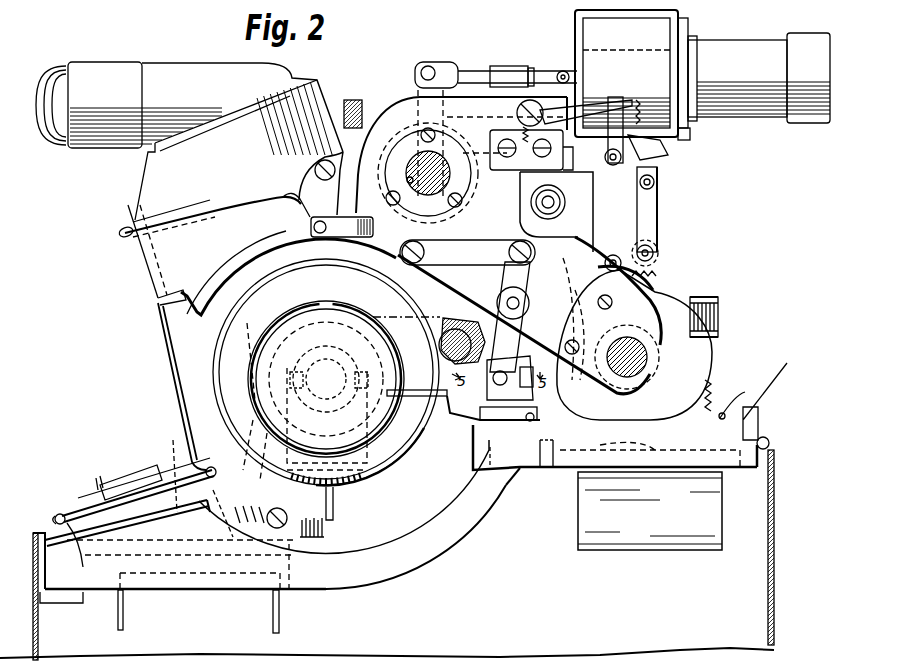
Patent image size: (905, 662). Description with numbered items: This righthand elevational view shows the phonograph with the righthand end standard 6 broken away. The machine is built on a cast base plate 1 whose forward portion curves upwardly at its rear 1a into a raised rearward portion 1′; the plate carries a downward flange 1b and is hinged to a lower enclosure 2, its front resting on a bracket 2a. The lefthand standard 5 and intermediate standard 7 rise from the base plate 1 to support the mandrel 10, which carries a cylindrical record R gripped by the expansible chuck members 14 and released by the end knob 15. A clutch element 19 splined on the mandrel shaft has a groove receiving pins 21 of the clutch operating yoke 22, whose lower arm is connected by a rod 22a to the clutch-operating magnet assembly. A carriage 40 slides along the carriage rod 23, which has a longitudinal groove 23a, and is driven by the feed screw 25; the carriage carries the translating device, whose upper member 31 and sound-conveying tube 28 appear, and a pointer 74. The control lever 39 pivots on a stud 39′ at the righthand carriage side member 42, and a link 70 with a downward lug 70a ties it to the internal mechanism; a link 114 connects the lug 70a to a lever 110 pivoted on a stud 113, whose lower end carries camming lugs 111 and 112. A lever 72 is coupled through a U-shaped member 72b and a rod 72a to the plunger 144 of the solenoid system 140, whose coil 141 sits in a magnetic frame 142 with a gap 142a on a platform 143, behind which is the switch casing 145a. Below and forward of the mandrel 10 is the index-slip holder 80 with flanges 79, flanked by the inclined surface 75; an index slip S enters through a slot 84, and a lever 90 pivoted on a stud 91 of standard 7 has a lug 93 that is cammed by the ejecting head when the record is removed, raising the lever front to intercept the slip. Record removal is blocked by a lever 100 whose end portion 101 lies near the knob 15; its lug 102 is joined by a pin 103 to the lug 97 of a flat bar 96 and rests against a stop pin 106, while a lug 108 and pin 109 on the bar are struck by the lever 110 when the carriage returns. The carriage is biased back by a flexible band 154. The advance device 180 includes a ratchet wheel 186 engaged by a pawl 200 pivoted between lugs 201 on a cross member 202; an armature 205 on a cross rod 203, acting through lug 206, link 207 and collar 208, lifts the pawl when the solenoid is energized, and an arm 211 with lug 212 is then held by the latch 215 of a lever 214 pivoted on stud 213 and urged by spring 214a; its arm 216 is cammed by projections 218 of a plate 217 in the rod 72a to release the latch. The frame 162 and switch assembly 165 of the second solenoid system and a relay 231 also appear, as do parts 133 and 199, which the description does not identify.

The base plate 1 is at (385, 560).
The upwardly curving rear portion 1a is at (465, 515).
The downward flange 1b is at (425, 560).
The raised rearward portion 1′ is at (748, 418).
The lower enclosure 2 is at (774, 575).
The bracket 2a is at (53, 602).
The lefthand standard 5 is at (594, 216).
The righthand end standard 6 is at (735, 405).
The intermediate standard 7 is at (440, 320).
The mandrel 10 is at (248, 397).
The expansible chuck members 14 is at (249, 374).
The righthand end knob 15 is at (256, 345).
The clutch element 19 is at (354, 376).
The pins 21 is at (365, 372).
The clutch operating yoke 22 is at (370, 505).
The rod 22a is at (290, 590).
The carriage rod 23 is at (452, 182).
The longitudinal groove 23a is at (407, 180).
The feed screw 25 is at (540, 203).
The sound-conveying tube 28 is at (85, 148).
The upper circular member 31 is at (150, 455).
The translating device control lever 39 is at (124, 238).
The horizontal stud 39′ is at (316, 175).
The carriage 40 is at (467, 95).
The righthand carriage side member 42 is at (377, 225).
The link 70 is at (342, 227).
The short lug 70a is at (412, 263).
The lever 72 is at (414, 74).
The rod 72a is at (470, 70).
The U-shaped member 72b is at (436, 66).
The pointer 74 is at (80, 500).
The inclined surface 75 is at (95, 500).
The flanges 79 is at (58, 514).
The holder 80 is at (70, 545).
The slot 84 is at (130, 478).
The lever 90 is at (312, 537).
The horizontal stud 91 is at (268, 512).
The lug 93 is at (335, 512).
The flat bar 96 is at (495, 450).
The lug portion 97 is at (535, 416).
The lever 100 is at (462, 432).
The end portion 101 is at (428, 382).
The lug portion 102 is at (600, 408).
The pin 103 is at (542, 470).
The stop pin 106 is at (545, 470).
The vertical lug 108 is at (500, 393).
The pin 109 is at (512, 378).
The lever 110 is at (510, 317).
The camming lug 111 is at (460, 330).
The camming lug 112 is at (530, 364).
The stud 113 is at (505, 302).
The link 114 is at (467, 252).
The leg 133 is at (124, 610).
The solenoid system 140 is at (692, 152).
The coil 141 is at (626, 78).
The rectangular frame 142 is at (575, 25).
The gap 142a is at (690, 140).
The horizontal platform 143 is at (605, 157).
The magnetic plunger 144 is at (578, 50).
The casing 145a is at (750, 40).
The flexible band 154 is at (575, 290).
The rectangular frame 162 is at (718, 333).
The switch assembly 165 is at (718, 300).
The advance device 180 is at (718, 365).
The ratchet wheel 186 is at (662, 280).
The spring 199 is at (718, 388).
The pawl 200 is at (656, 270).
The lugs 201 is at (613, 255).
The cross member 202 is at (570, 275).
The cross rod 203 is at (657, 203).
The armature 205 is at (655, 152).
The lug 206 is at (656, 182).
The link 207 is at (650, 217).
The spacing collar 208 is at (658, 253).
The arm 211 is at (640, 100).
The lug 212 is at (616, 97).
The horizontal stud 213 is at (500, 131).
The lever 214 is at (592, 104).
The spring 214a is at (527, 142).
The latch 215 is at (610, 108).
The longitudinal arm 216 is at (492, 145).
The vertical plate 217 is at (508, 58).
The rounded projections 218 is at (537, 62).
The relay 231 is at (650, 511).
The record R is at (228, 357).
The index slip S is at (96, 478).